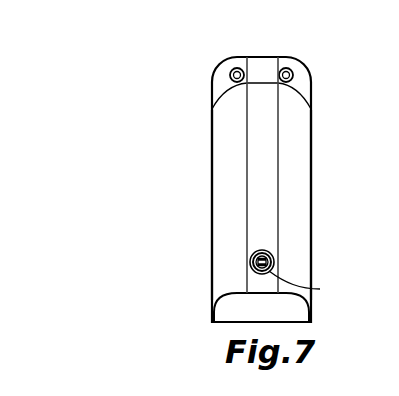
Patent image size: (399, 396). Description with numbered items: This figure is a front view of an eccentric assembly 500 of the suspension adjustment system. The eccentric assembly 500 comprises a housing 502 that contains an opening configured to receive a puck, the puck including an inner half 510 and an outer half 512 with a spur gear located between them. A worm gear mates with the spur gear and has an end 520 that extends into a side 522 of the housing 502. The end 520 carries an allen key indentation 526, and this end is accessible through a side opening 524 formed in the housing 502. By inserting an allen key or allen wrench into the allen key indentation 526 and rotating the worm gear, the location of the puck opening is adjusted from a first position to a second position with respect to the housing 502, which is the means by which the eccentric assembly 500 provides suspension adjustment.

The eccentric assembly 500 is at (258, 189).
The housing 502 is at (300, 135).
The inner half 510 is at (312, 188).
The outer half 512 is at (212, 205).
The end 520 is at (256, 271).
The side 522 is at (257, 133).
The side opening 524 is at (309, 284).
The allen key indentation 526 is at (250, 263).